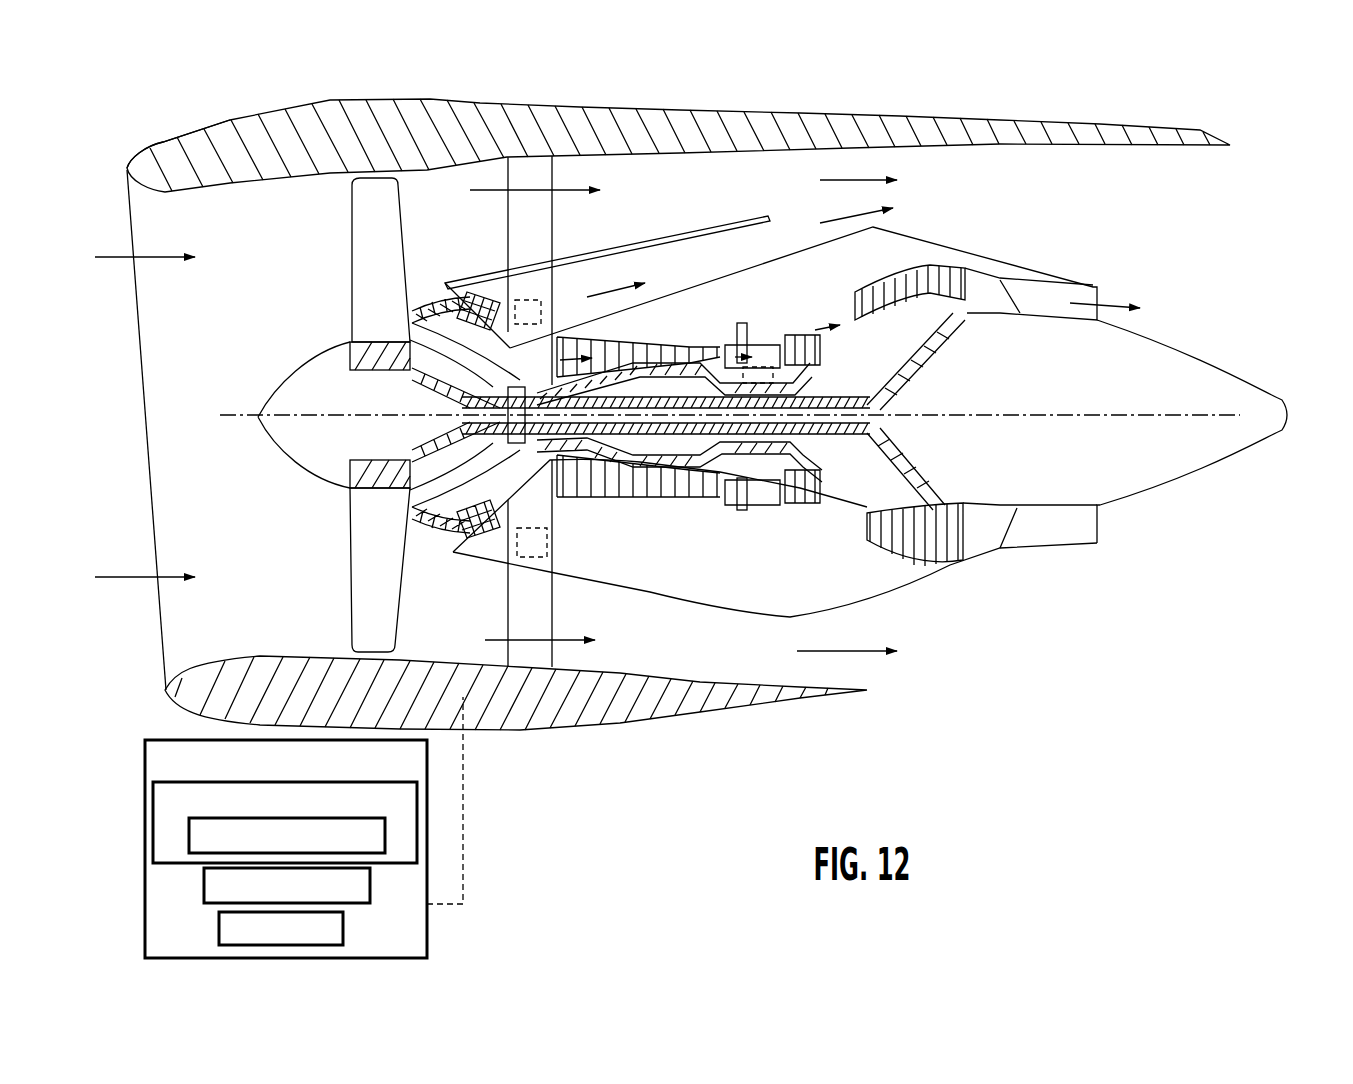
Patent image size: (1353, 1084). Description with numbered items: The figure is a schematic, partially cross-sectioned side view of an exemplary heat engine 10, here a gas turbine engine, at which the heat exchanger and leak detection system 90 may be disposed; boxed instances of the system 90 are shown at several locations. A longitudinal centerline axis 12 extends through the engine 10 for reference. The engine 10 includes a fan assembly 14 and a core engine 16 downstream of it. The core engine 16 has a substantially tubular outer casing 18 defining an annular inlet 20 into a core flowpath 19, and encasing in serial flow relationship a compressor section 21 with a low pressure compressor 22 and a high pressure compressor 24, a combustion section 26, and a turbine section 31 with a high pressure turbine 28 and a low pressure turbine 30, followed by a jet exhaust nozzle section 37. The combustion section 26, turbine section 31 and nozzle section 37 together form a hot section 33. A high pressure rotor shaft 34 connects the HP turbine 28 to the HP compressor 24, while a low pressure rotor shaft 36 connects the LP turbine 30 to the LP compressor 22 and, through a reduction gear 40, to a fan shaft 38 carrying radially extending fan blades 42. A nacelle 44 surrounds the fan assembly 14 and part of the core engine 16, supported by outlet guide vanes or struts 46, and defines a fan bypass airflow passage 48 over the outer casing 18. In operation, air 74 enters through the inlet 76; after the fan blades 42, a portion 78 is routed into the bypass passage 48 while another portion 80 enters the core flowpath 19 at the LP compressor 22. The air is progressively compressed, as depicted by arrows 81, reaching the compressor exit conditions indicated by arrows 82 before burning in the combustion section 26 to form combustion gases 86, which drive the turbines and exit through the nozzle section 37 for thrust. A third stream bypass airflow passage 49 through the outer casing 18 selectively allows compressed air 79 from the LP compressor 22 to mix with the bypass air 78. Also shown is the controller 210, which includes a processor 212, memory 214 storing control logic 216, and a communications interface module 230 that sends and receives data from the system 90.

The heat engine 10 is at (1262, 190).
The longitudinal centerline axis 12 is at (1043, 407).
The fan assembly 14 is at (435, 195).
The core engine 16 is at (826, 258).
The outer casing 18 is at (702, 237).
The core flowpath 19 is at (600, 335).
The annular inlet 20 is at (462, 550).
The compressor section 21 is at (568, 534).
The low pressure compressor 22 is at (510, 497).
The high pressure compressor 24 is at (578, 487).
The combustion section 26 is at (760, 500).
The high pressure turbine 28 is at (828, 497).
The low pressure turbine 30 is at (945, 582).
The turbine section 31 is at (866, 570).
The hot section 33 is at (778, 575).
The high pressure rotor shaft 34 is at (838, 372).
The low pressure rotor shaft 36 is at (905, 382).
The jet exhaust nozzle section 37 is at (1028, 550).
The fan shaft 38 is at (408, 383).
The reduction gear 40 is at (517, 383).
The fan blades 42 is at (370, 248).
The nacelle 44 is at (370, 104).
The outlet guide vanes or struts 46 is at (545, 178).
The fan bypass airflow passage 48 is at (667, 184).
The third stream bypass airflow passage 49 is at (700, 257).
The air 74 is at (165, 260).
The inlet 76 is at (190, 627).
The bypass air 78 is at (575, 191).
The third stream compressed air 79 is at (587, 297).
The core air 80 is at (462, 290).
The compressed air 81 is at (513, 347).
The compressor exit air 82 is at (730, 347).
The combustion gases 86 is at (910, 282).
The heat exchanger and leak detection system 90 is at (482, 583).
The controller 210 is at (304, 827).
The processor 212 is at (287, 885).
The memory 214 is at (285, 822).
The control logic 216 is at (287, 835).
The communications interface module 230 is at (281, 928).